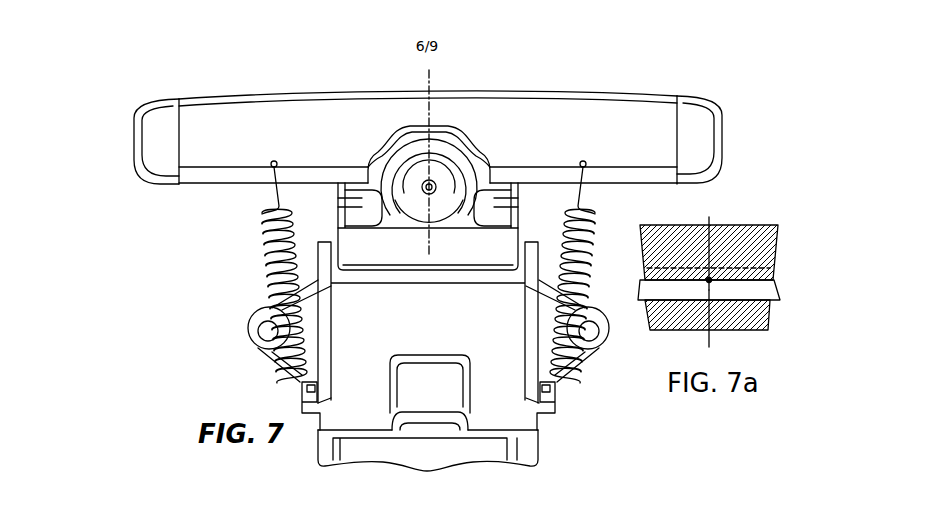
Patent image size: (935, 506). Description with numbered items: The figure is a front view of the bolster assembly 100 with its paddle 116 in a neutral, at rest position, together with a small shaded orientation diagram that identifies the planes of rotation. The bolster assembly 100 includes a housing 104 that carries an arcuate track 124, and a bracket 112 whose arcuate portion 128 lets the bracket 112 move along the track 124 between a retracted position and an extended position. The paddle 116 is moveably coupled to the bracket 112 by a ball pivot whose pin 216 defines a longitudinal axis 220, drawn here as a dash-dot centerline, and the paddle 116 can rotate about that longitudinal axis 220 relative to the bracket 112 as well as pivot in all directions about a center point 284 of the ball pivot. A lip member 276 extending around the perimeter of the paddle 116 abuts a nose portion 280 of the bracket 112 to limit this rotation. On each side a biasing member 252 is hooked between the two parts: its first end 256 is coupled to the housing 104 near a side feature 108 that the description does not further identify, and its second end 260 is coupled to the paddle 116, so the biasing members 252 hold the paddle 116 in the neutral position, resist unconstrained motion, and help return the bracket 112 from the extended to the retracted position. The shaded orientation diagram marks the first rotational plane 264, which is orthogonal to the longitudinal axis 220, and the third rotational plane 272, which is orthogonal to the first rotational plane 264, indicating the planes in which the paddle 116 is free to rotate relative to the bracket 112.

In FIG. 7, the bolster assembly 100 is at (78, 63).
In FIG. 7, the paddle 116 is at (223, 127).
In FIG. 7, the lip member 276 is at (190, 184).
In FIG. 7, the longitudinal axis 220 is at (428, 68).
In FIG. 7A, the longitudinal axis 220 is at (712, 342).
In FIG. 7, the pin 216 is at (452, 190).
In FIG. 7, the nose portion 280 is at (430, 186).
In FIG. 7, the second end 260 is at (276, 190).
In FIG. 7, the biasing member 252 is at (268, 273).
In FIG. 7, the bracket 112 is at (355, 246).
In FIG. 7, the track 124 is at (368, 330).
In FIG. 7, the housing 104 is at (503, 380).
In FIG. 7, the arcuate portion 128 is at (505, 447).
In FIG. 7, the mounting ear 108 is at (273, 357).
In FIG. 7, the first end 256 is at (302, 399).
In FIG. 7A, the first rotational plane 264 is at (770, 240).
In FIG. 7A, the center point 284 is at (710, 280).
In FIG. 7A, the third rotational plane 272 is at (775, 293).